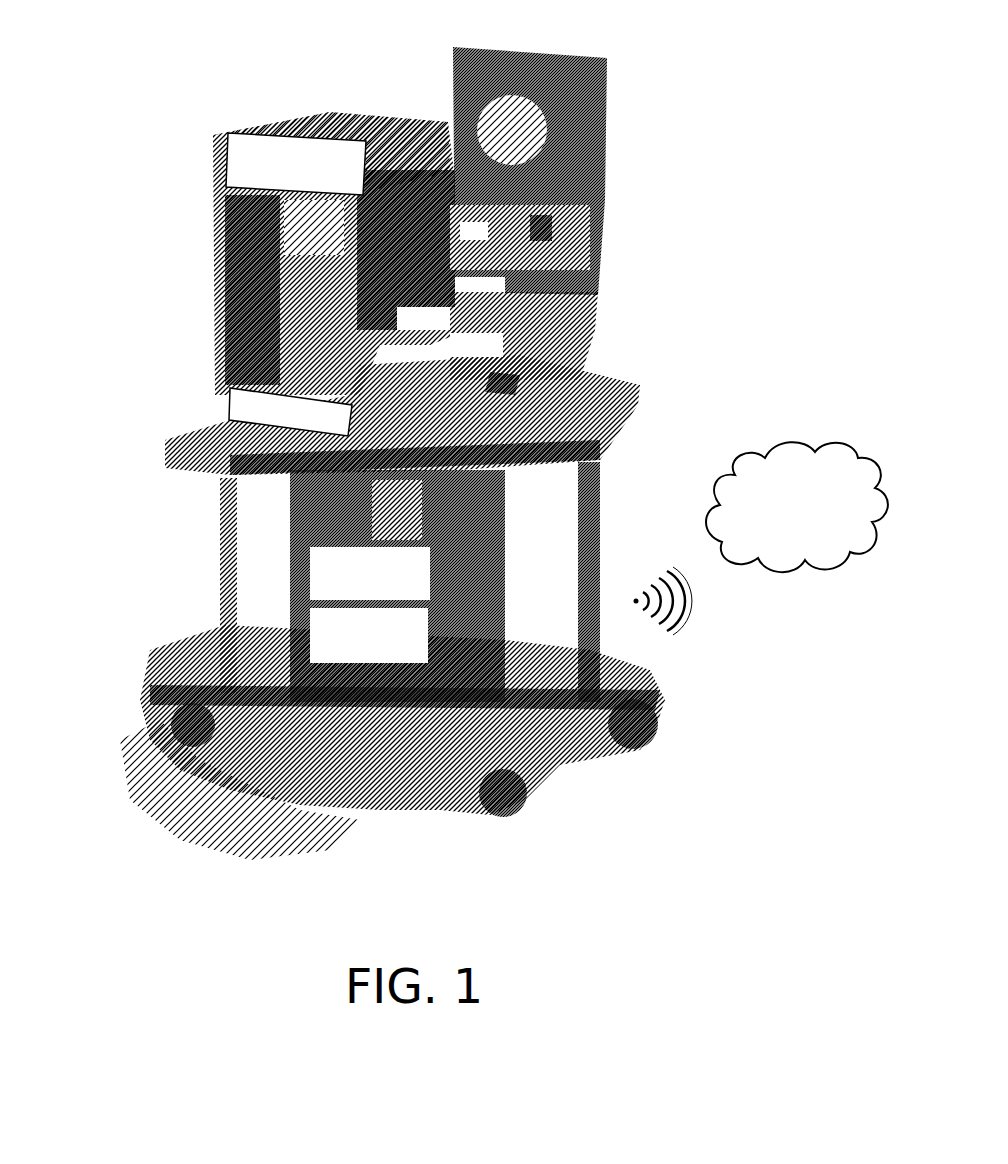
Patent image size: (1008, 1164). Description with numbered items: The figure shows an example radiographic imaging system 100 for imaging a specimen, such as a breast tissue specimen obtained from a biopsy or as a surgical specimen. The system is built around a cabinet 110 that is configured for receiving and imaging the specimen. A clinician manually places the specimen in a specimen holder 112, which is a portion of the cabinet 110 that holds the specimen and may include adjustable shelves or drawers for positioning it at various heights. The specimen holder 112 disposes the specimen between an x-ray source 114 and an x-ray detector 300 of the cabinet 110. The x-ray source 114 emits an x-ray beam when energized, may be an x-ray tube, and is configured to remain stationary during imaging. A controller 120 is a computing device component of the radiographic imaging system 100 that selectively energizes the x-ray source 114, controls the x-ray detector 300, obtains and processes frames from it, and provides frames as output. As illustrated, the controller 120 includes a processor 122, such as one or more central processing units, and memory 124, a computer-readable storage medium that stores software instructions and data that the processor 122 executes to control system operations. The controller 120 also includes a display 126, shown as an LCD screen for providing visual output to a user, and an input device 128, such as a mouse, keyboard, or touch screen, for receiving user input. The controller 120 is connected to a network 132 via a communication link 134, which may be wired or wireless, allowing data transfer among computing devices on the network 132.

The radiographic imaging system 100 is at (417, 437).
The cabinet 110 is at (383, 115).
The specimen holder 112 is at (318, 285).
The x-ray source 114 is at (320, 135).
The controller 120 is at (273, 586).
The processor 122 is at (370, 573).
The memory 124 is at (369, 635).
The display 126 is at (603, 190).
The input device 128 is at (530, 320).
The network 132 is at (797, 507).
The communication link 134 is at (684, 610).
The x-ray detector 300 is at (232, 408).